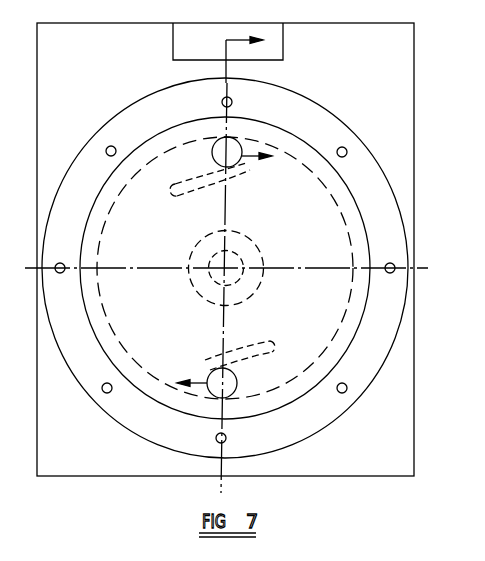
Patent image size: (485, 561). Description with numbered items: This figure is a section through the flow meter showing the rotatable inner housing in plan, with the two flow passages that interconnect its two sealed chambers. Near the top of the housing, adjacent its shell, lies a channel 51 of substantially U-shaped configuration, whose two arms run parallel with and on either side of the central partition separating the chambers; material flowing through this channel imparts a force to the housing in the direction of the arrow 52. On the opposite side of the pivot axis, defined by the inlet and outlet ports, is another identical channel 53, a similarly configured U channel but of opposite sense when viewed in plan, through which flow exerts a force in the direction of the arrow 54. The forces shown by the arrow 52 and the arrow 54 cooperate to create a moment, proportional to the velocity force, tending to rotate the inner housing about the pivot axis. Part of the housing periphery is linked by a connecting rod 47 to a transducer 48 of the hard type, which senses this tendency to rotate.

The connecting rod 47 is at (226, 70).
The transducer 48 is at (203, 42).
The channel 51 is at (223, 146).
The arrow 52 is at (250, 161).
The channel 53 is at (252, 380).
The arrow 54 is at (192, 381).